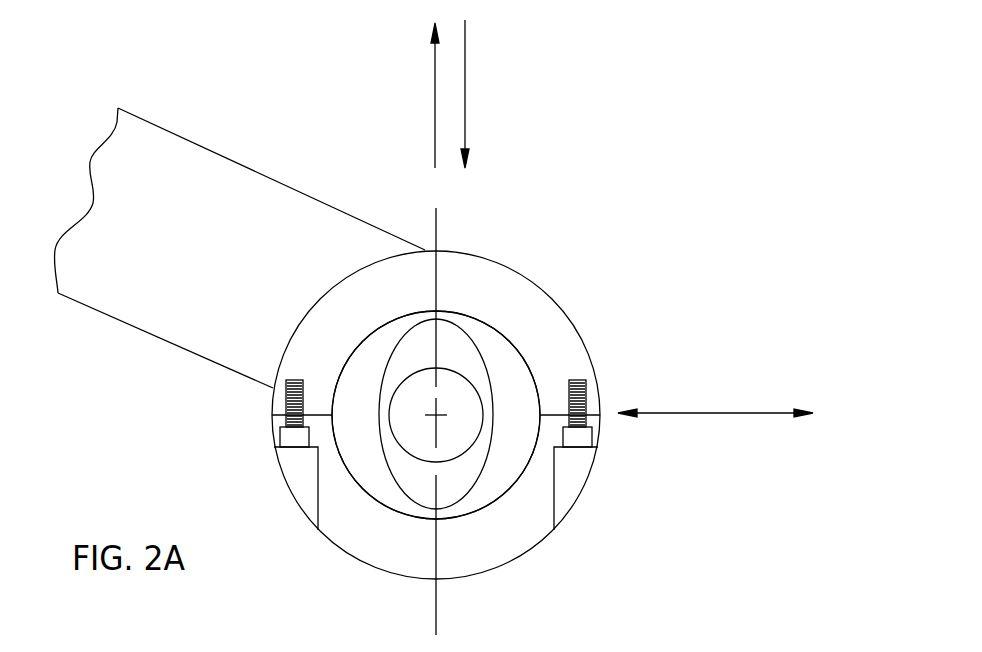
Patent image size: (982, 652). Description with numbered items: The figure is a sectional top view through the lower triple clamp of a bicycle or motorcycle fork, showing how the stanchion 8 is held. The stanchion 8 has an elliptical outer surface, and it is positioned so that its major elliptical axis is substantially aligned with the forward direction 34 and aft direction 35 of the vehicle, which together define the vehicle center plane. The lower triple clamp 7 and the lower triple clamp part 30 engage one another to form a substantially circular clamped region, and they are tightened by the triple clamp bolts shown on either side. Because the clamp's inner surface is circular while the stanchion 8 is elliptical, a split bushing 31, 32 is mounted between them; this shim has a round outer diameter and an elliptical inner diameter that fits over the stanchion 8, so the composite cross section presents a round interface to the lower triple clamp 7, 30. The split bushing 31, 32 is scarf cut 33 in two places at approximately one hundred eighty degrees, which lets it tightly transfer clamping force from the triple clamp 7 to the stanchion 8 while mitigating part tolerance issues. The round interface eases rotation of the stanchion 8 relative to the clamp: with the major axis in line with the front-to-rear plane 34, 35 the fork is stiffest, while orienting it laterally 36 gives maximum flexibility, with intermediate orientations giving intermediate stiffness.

The lower triple clamp 7 is at (313, 350).
The stanchion 8 is at (415, 347).
The lower triple clamp part 30 is at (509, 520).
The split bushing 31 is at (352, 413).
The split bushing 32 is at (507, 382).
The scarf cut 33 is at (445, 518).
The forward direction 34 is at (465, 63).
The aft direction 35 is at (435, 120).
The lateral direction 36 is at (727, 413).